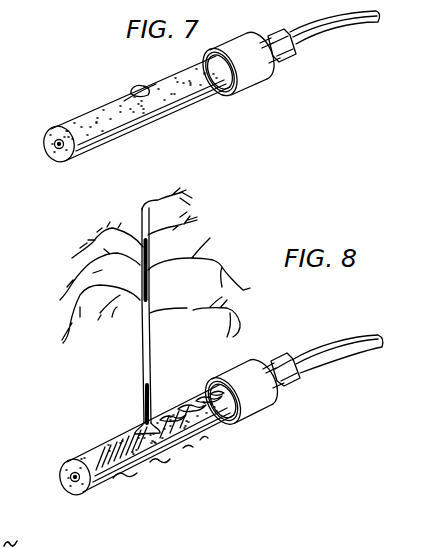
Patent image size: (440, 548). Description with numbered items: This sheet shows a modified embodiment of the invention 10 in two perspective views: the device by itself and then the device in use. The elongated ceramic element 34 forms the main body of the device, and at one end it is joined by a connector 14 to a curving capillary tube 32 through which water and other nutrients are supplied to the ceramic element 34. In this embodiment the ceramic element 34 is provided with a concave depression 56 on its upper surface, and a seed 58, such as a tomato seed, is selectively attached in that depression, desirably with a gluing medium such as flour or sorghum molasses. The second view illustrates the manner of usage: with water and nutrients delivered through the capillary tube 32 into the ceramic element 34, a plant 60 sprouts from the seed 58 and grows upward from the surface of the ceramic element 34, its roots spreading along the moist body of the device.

In FIG. 7, the invention 10 is at (52, 204).
In FIG. 8, the invention 10 is at (206, 458).
In FIG. 7, the connector collar 14 is at (255, 78).
In FIG. 8, the connector collar 14 is at (252, 407).
In FIG. 7, the capillary tube 32 is at (360, 30).
In FIG. 8, the capillary tube 32 is at (347, 360).
In FIG. 7, the ceramic element 34 is at (192, 120).
In FIG. 8, the ceramic element 34 is at (122, 473).
In FIG. 7, the ring 56 is at (147, 104).
In FIG. 7, the seed 58 is at (131, 91).
In FIG. 8, the plant 60 is at (148, 373).